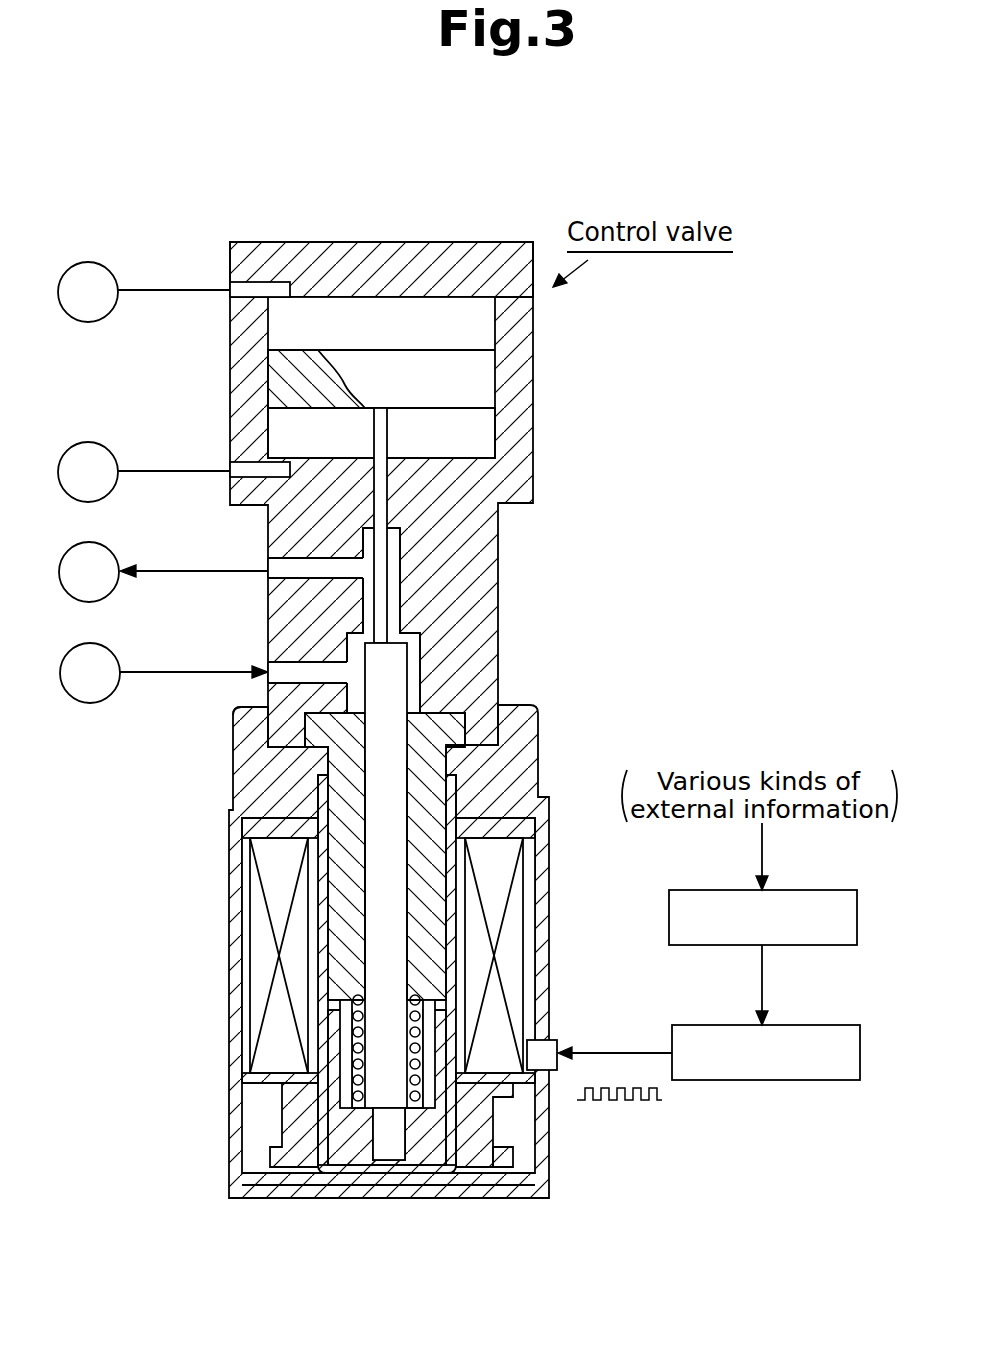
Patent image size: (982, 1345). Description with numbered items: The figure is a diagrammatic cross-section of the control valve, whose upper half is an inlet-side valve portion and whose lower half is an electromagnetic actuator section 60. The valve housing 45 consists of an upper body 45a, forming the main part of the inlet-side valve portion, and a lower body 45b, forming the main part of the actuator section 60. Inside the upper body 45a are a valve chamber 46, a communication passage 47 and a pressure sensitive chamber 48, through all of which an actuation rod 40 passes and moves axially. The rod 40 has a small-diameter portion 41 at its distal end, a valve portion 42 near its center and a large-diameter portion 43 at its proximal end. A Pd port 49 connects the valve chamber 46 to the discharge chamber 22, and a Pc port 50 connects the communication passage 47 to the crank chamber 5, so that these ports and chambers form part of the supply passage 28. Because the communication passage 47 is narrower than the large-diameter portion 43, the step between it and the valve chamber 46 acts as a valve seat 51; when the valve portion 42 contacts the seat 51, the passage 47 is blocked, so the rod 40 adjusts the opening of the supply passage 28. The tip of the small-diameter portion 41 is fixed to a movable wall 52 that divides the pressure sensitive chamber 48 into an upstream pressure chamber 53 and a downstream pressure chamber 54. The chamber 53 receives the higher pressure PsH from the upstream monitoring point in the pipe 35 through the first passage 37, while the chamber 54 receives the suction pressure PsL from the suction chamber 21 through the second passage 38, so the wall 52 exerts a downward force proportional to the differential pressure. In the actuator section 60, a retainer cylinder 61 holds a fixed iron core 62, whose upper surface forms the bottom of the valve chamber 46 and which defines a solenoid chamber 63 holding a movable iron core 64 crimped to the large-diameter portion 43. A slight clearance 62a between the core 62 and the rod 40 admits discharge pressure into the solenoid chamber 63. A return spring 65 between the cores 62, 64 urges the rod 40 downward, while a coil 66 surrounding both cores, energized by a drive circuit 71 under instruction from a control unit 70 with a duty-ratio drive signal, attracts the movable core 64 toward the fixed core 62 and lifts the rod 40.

The crank chamber 5 is at (105, 544).
The suction chamber 21 is at (78, 442).
The discharge chamber 22 is at (105, 646).
The supply passage 28 is at (197, 570).
The pipe 35 is at (78, 262).
The first passage 37 is at (174, 291).
The second passage 38 is at (186, 470).
The actuation rod 40 is at (402, 784).
The small-diameter portion 41 is at (383, 552).
The valve portion 42 is at (393, 653).
The large-diameter portion 43 is at (387, 862).
The valve housing 45 is at (379, 238).
The upper body 45a is at (266, 250).
The lower body 45b is at (240, 808).
The valve chamber 46 is at (413, 673).
The communication passage 47 is at (393, 597).
The pressure sensitive chamber 48 is at (485, 423).
The Pd port 49 is at (268, 680).
The Pc port 50 is at (268, 578).
The valve seat 51 is at (358, 632).
The movable wall 52 is at (483, 380).
The P1 pressure chamber 53 is at (335, 337).
The P2 pressure chamber 54 is at (342, 450).
The electromagnetic actuator section 60 is at (540, 765).
The retainer cylinder 61 is at (316, 858).
The fixed iron core 62 is at (328, 806).
The clearance 62a is at (360, 925).
The solenoid chamber 63 is at (340, 1000).
The movable iron core 64 is at (340, 1134).
The return spring 65 is at (340, 1090).
The coil 66 is at (538, 966).
The control unit 70 is at (685, 890).
The drive circuit 71 is at (687, 1025).